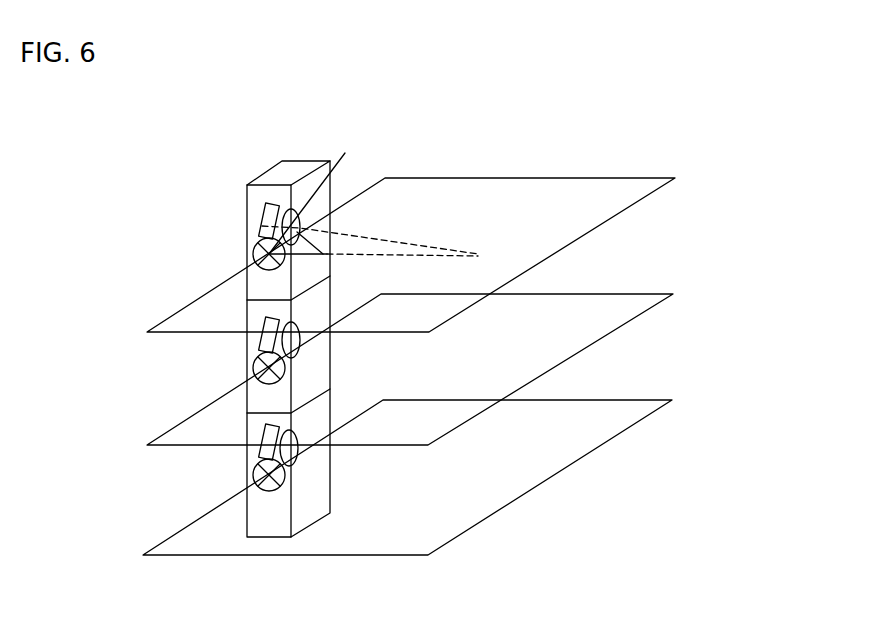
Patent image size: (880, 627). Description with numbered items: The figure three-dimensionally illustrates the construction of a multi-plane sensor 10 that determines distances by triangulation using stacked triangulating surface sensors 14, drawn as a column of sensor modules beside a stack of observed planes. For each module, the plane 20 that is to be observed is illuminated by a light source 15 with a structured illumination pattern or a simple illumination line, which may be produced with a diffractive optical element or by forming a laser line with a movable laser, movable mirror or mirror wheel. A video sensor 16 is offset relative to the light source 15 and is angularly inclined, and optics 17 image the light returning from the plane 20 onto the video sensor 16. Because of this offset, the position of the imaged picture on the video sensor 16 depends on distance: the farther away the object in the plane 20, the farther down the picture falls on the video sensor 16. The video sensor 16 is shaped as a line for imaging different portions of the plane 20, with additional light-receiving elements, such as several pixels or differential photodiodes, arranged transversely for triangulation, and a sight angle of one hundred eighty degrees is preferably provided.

The multi-plane sensor 10 is at (262, 176).
The triangulating surface sensors 14 is at (247, 209).
The light source 15 is at (173, 500).
The video sensor 16 is at (238, 562).
The optics 17 is at (345, 354).
The plane 20 is at (466, 366).